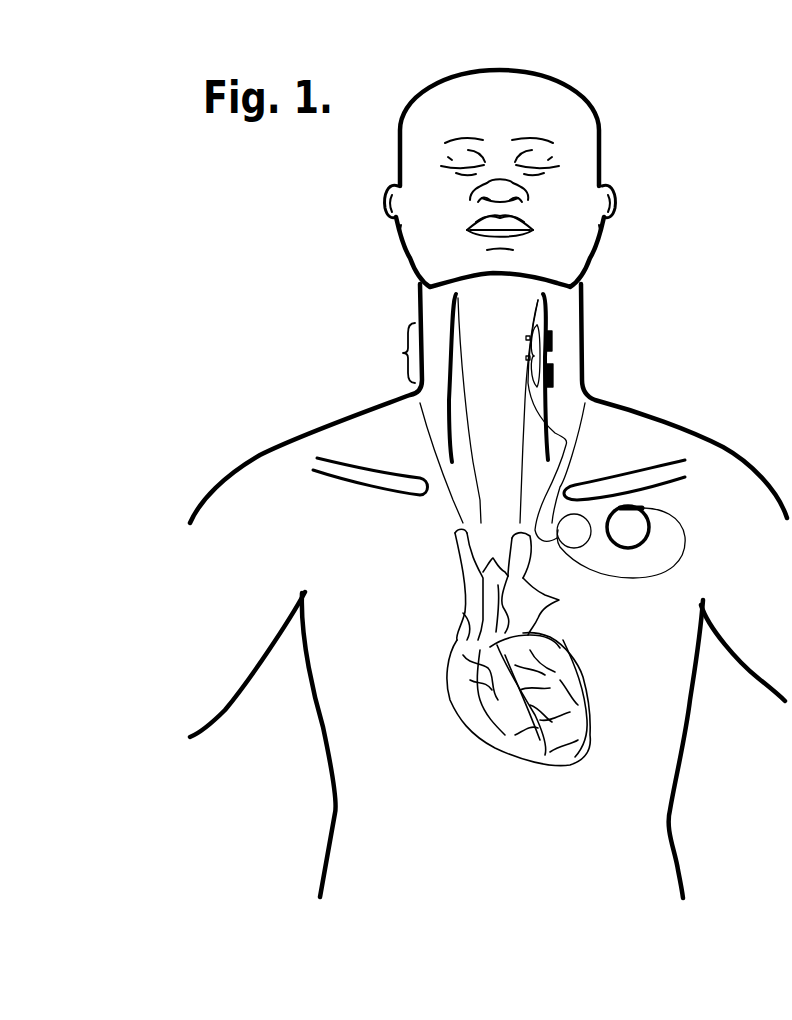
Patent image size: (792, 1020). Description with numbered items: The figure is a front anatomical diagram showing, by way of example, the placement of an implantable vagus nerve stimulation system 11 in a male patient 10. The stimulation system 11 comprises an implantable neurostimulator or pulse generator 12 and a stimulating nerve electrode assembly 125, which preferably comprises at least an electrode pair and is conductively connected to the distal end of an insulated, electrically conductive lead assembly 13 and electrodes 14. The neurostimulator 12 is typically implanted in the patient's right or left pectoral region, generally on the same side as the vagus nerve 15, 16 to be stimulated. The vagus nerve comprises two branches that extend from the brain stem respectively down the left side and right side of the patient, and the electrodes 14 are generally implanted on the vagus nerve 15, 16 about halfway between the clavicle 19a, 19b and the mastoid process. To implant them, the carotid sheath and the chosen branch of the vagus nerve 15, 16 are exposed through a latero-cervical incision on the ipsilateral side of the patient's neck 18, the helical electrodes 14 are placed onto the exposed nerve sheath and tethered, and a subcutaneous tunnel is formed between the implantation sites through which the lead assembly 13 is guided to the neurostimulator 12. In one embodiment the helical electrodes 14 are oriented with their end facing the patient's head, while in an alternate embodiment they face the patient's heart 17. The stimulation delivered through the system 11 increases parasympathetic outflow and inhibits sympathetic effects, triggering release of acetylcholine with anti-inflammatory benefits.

The male patient 10 is at (598, 118).
The vagus nerve stimulation system 11 is at (630, 590).
The neurostimulator 12 is at (643, 507).
The lead assembly 13 is at (555, 485).
The electrodes 14 is at (550, 354).
The vagus nerve 15 is at (550, 322).
The vagus nerve 16 is at (460, 358).
The heart 17 is at (587, 695).
The neck 18 is at (394, 353).
The clavicle 19a is at (590, 484).
The clavicle 19b is at (400, 479).
The stimulating nerve electrode assembly 125 is at (652, 362).